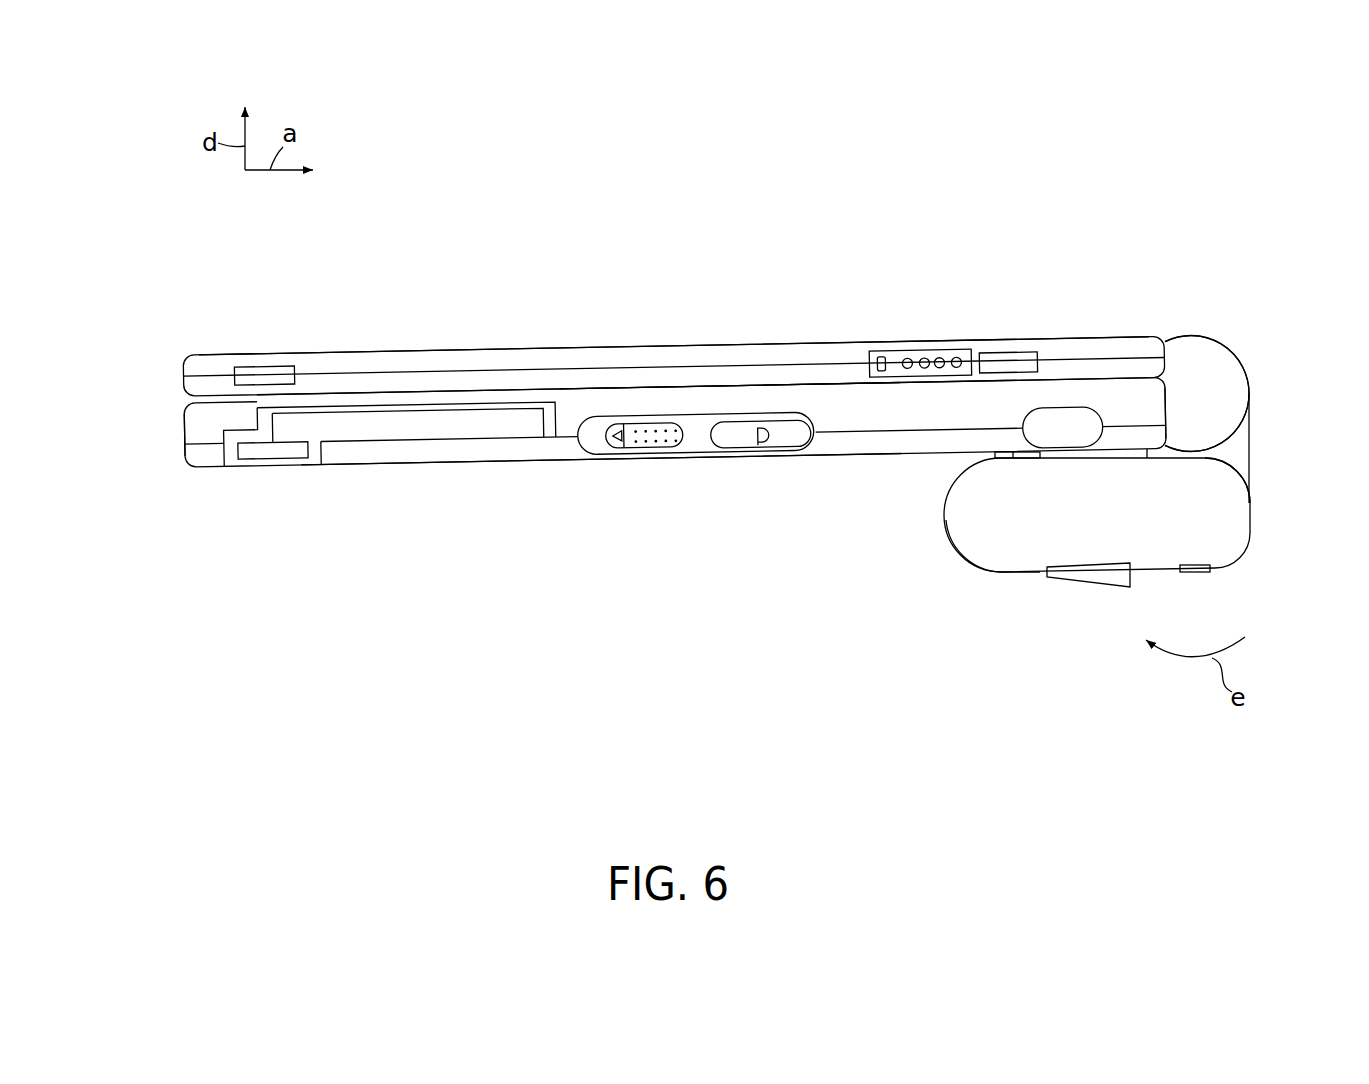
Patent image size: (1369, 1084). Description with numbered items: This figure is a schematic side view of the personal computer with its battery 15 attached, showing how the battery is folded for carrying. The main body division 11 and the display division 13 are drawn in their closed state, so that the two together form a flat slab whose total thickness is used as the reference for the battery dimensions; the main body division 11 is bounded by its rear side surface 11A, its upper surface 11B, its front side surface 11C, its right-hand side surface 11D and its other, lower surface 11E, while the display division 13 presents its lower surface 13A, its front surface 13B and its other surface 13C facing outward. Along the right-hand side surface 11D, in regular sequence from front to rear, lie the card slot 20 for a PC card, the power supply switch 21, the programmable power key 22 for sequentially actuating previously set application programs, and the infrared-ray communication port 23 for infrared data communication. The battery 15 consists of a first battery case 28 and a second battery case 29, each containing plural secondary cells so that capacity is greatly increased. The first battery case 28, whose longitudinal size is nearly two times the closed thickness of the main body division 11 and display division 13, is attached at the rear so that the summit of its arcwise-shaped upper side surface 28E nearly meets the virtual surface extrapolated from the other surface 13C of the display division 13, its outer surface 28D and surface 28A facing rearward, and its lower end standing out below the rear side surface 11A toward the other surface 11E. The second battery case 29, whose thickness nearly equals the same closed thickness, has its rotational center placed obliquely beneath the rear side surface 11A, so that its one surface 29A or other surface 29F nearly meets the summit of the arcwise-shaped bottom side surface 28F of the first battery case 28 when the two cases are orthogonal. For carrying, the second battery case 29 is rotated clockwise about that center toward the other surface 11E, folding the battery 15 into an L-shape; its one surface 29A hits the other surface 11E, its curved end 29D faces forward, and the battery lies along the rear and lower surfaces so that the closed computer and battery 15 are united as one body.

The main body division 11 is at (185, 458).
The rear side surface 11A is at (1169, 396).
The upper surface of lower housing 11B is at (741, 389).
The front side surface 11C is at (181, 424).
The right-hand side surface 11D is at (947, 411).
The other surface 11E is at (561, 471).
The display division 13 is at (182, 365).
The lower surface of upper housing 13A is at (837, 397).
The front end surface of upper housing 13B is at (180, 381).
The other surface of display division 13C is at (553, 342).
The battery 15 is at (936, 558).
The card slot 20 is at (406, 428).
The power supply switch 21 is at (678, 441).
The programmable power key 22 is at (783, 438).
The infrared-ray communication port 23 is at (1070, 420).
The first battery case 28 is at (1243, 448).
The hinge surface 28A is at (1248, 466).
The hinge outer surface 28D is at (1253, 420).
The arcwise-shaped upper side surface 28E is at (1201, 336).
The arcwise-shaped bottom side surface 28F is at (1236, 557).
The second battery case 29 is at (1160, 573).
The one surface of second battery case 29A is at (999, 452).
The curved surface of grip 29D is at (989, 547).
The other surface of second battery case 29F is at (1018, 570).